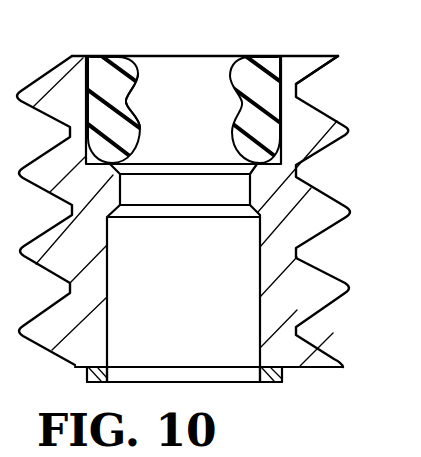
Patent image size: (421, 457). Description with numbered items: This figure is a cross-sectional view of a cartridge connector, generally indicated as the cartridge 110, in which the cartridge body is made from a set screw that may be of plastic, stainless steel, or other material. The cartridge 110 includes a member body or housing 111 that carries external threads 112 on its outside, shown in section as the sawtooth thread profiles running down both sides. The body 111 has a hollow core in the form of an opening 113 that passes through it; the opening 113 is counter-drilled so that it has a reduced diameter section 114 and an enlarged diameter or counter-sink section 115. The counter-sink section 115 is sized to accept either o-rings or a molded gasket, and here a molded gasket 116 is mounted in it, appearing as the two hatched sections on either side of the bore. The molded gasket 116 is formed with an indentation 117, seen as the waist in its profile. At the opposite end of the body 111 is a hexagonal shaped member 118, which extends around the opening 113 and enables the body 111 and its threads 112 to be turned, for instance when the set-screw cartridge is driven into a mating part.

The cartridge 110 is at (352, 100).
The member body 111 is at (292, 75).
The external threads 112 is at (352, 226).
The opening 113 is at (107, 328).
The reduced diameter section 114 is at (248, 190).
The counter-sink section 115 is at (270, 66).
The molded gasket 116 is at (138, 82).
The indentation 117 is at (133, 110).
The hexagonal shaped member 118 is at (281, 374).